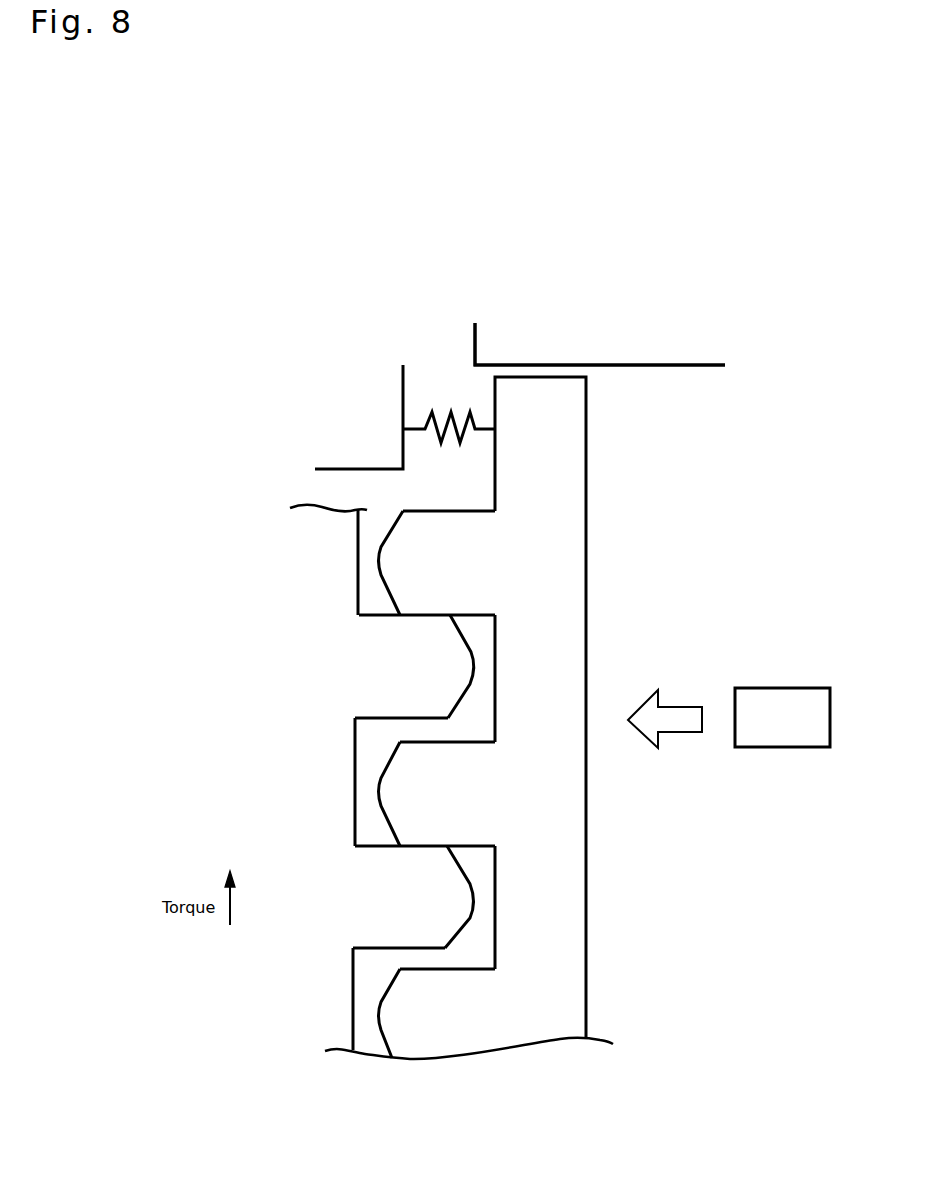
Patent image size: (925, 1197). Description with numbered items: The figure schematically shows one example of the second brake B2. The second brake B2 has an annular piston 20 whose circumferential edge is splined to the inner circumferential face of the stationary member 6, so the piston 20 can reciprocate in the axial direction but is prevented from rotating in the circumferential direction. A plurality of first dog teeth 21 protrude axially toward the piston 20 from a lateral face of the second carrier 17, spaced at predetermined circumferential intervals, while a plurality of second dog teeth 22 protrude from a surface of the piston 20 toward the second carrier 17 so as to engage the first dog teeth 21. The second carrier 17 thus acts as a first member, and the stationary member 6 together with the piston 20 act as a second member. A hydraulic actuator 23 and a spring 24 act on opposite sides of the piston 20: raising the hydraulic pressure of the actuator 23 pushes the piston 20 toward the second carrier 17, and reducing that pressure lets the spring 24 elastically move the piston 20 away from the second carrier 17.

The stationary member 6 is at (588, 338).
The second brake B2 is at (722, 340).
The spring 24 is at (444, 412).
The annular piston 20 is at (568, 477).
The second dog teeth 22 is at (444, 530).
The second carrier 17 is at (322, 572).
The first dog teeth 21 is at (455, 668).
The hydraulic actuator 23 is at (795, 688).